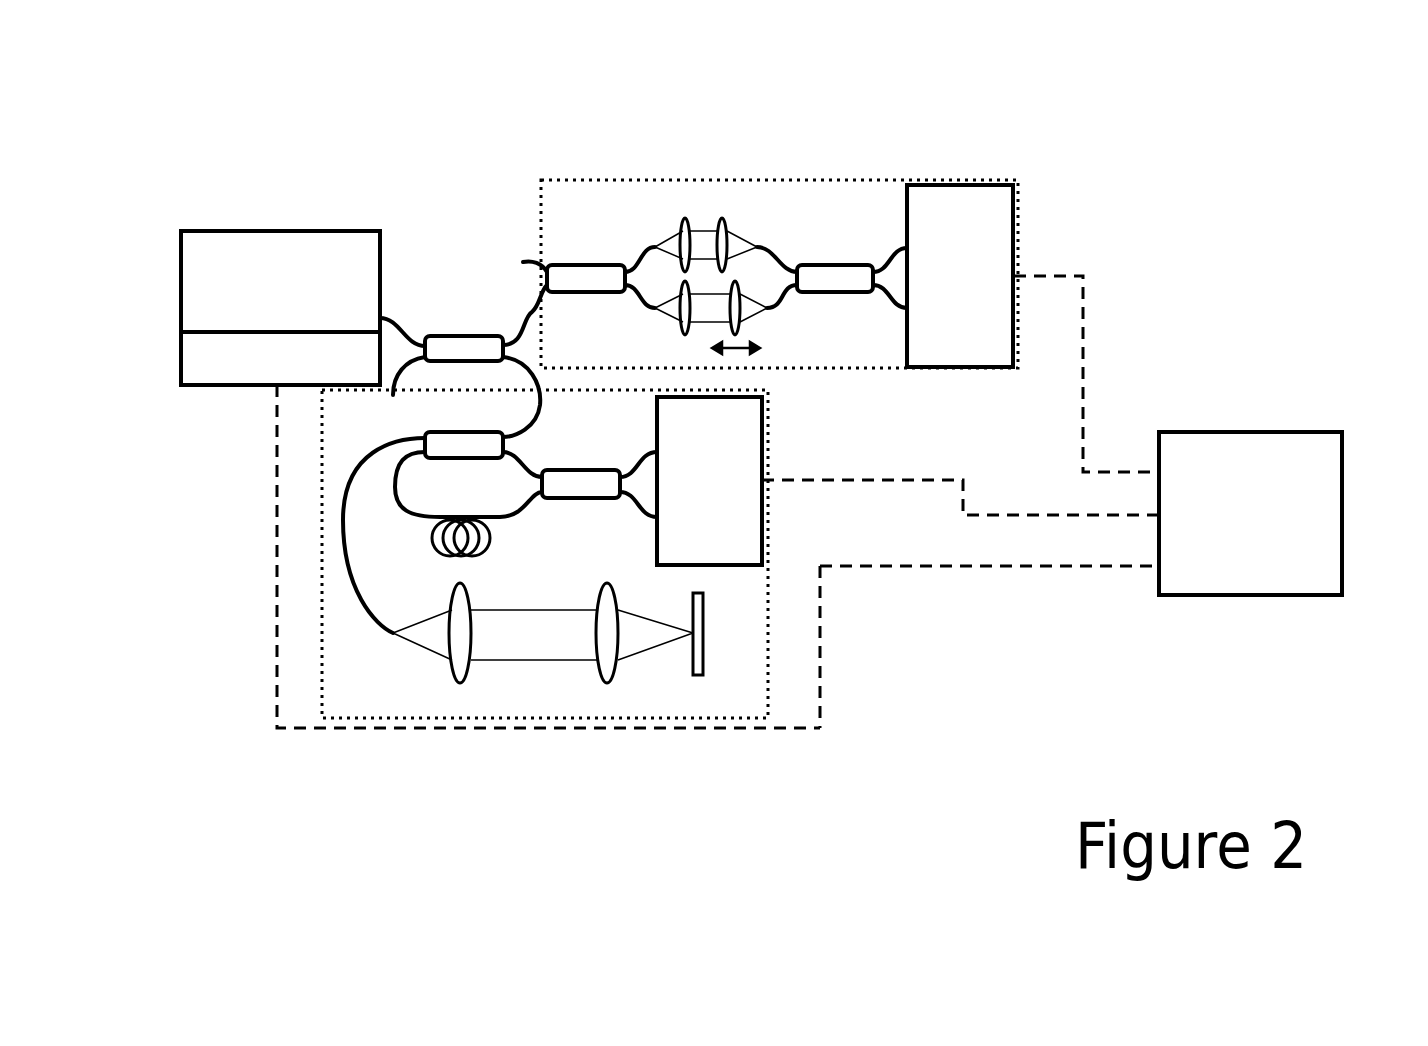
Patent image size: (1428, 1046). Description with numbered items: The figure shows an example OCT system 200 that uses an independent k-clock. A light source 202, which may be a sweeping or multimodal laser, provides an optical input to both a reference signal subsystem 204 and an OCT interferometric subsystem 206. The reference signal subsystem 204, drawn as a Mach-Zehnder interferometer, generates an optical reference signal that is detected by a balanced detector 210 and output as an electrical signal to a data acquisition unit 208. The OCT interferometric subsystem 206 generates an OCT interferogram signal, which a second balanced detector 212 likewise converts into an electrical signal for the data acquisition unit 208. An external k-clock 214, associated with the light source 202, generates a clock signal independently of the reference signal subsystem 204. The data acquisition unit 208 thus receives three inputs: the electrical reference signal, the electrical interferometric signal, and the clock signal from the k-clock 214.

The OCT system 200 is at (1248, 218).
The light source 202 is at (261, 309).
The reference signal subsystem 204 is at (851, 200).
The OCT interferometric subsystem 206 is at (623, 626).
The data acquisition unit 208 is at (1234, 432).
The balanced detector 210 is at (993, 278).
The balanced detector 212 is at (752, 555).
The k-clock 214 is at (252, 385).